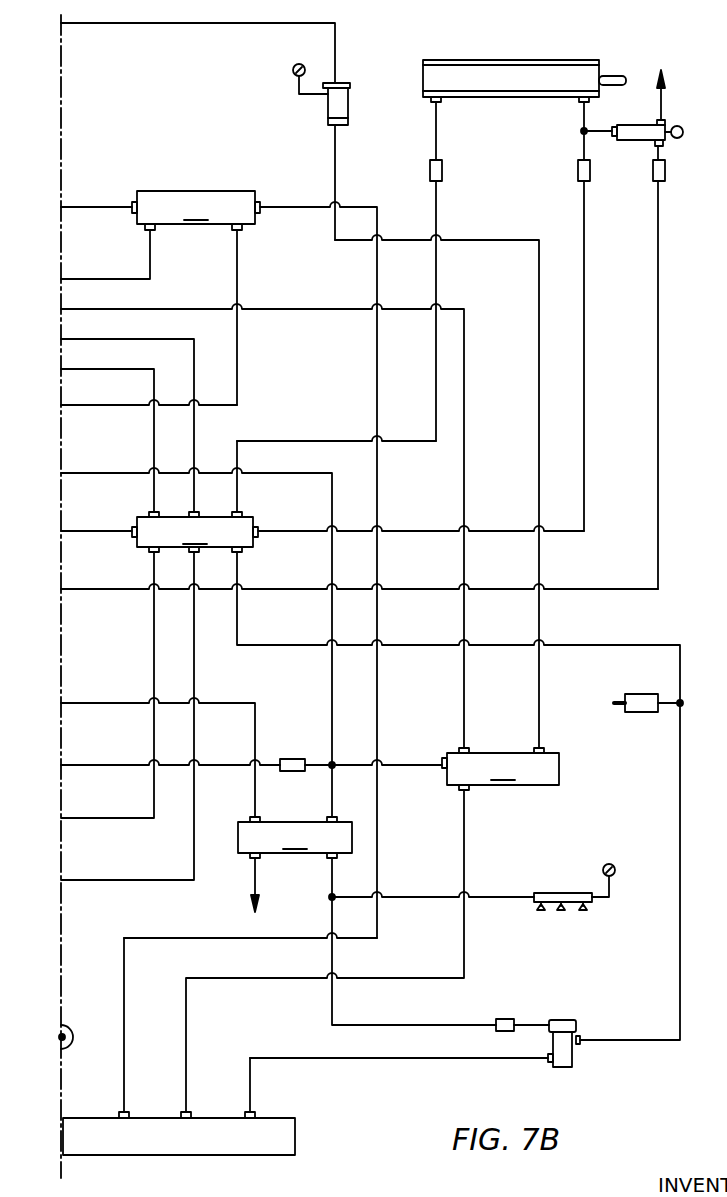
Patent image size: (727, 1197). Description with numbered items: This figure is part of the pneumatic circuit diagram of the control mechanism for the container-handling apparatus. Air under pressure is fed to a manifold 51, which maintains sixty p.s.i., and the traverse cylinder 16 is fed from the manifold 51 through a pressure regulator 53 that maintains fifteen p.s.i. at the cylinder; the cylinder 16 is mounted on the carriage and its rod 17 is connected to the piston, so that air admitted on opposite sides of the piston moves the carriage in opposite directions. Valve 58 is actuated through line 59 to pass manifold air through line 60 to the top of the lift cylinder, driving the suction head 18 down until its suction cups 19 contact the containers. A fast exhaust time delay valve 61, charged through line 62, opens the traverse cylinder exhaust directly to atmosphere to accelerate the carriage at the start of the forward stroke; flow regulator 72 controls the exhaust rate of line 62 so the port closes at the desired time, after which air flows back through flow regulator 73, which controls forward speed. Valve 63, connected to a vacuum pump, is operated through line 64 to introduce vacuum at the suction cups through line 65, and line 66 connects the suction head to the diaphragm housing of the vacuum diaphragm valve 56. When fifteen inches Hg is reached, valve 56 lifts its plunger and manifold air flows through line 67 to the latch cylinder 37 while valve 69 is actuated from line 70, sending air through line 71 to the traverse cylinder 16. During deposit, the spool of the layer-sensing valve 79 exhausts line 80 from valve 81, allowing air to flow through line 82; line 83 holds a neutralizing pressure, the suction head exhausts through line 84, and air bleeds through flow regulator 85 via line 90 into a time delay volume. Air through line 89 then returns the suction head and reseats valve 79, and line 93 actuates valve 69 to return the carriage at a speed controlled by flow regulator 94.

The traverse cylinder 16 is at (559, 70).
The rod 17 is at (612, 76).
The suction head 18 is at (558, 893).
The suction cups 19 is at (582, 912).
The latch cylinder 37 is at (648, 691).
The manifold 51 is at (295, 1136).
The pressure regulator 53 is at (82, 1038).
The vacuum diaphragm valve 56 is at (568, 1058).
The valve 58 is at (219, 651).
The line 59 is at (165, 331).
The line 60 is at (96, 220).
The fast exhaust time delay valve 61 is at (629, 134).
The line 62 is at (375, 399).
The valve 63 is at (295, 864).
The line 64 is at (173, 758).
The line 65 is at (431, 888).
The line 66 is at (440, 944).
The line 67 is at (630, 873).
The valve 69 is at (159, 609).
The line 70 is at (458, 627).
The line 71 is at (352, 346).
The flow regulator 72 is at (674, 165).
The flow regulator 73 is at (424, 316).
The layer-sensing valve 79 is at (325, 108).
The line 80 is at (453, 484).
The valve 81 is at (310, 708).
The line 82 is at (387, 762).
The line 83 is at (199, 616).
The line 84 is at (346, 789).
The flow regulator 85 is at (306, 754).
The line 89 is at (198, 596).
The line 90 is at (170, 777).
The line 93 is at (107, 700).
The flow regulator 94 is at (452, 143).